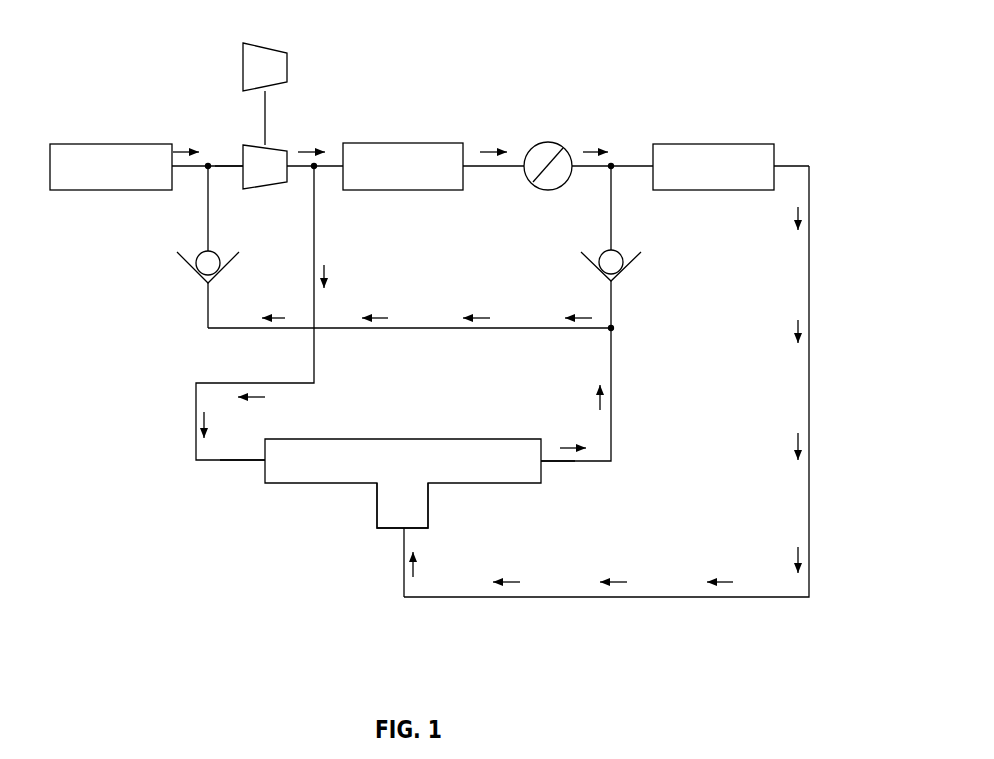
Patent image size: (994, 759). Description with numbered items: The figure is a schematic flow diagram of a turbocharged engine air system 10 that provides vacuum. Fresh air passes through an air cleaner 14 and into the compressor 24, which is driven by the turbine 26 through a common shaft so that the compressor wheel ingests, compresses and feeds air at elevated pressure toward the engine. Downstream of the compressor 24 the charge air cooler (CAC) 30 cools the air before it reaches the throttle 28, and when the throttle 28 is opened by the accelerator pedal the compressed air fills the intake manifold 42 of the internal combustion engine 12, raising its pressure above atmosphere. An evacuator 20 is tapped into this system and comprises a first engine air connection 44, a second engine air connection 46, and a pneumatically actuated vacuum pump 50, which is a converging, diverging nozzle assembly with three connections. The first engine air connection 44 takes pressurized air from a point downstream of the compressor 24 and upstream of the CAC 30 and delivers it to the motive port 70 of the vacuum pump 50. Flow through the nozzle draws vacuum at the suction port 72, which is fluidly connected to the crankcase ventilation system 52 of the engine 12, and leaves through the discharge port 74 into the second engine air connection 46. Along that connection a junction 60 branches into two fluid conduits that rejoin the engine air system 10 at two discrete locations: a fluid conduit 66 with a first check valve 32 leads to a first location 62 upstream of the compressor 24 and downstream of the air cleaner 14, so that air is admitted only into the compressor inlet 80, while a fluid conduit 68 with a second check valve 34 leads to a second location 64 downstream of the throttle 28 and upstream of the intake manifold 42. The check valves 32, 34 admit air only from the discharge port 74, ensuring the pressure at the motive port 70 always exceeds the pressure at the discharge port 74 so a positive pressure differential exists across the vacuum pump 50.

The turbocharged engine air system 10 is at (634, 22).
The internal combustion engine 12 is at (732, 144).
The air cleaner 14 is at (98, 144).
The evacuator 20 is at (490, 432).
The compressor 24 is at (272, 187).
The turbine 26 is at (242, 67).
The throttle 28 is at (548, 142).
The charge air cooler (CAC) 30 is at (387, 143).
The first check valve 32 is at (183, 274).
The second check valve 34 is at (585, 272).
The intake manifold 42 is at (613, 170).
The first engine air connection 44 is at (314, 353).
The second engine air connection 46 is at (612, 372).
The pneumatically actuated vacuum pump 50 is at (482, 483).
The crankcase ventilation system 52 is at (779, 156).
The junction 60 is at (613, 329).
The first location 62 is at (207, 162).
The second location 64 is at (611, 163).
The fluid conduit 66 is at (208, 202).
The fluid conduit 68 is at (611, 222).
The motive port 70 is at (265, 470).
The suction port 72 is at (420, 528).
The discharge port 74 is at (541, 468).
The compressor inlet 80 is at (242, 151).